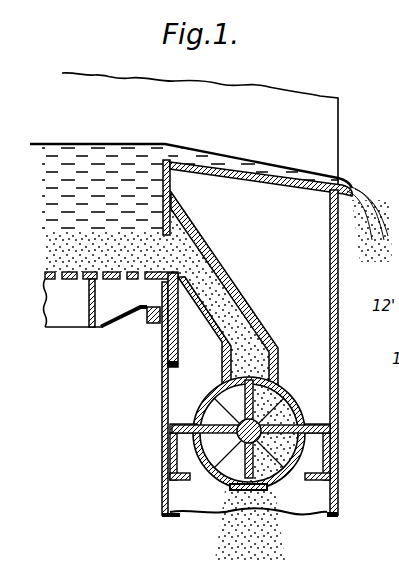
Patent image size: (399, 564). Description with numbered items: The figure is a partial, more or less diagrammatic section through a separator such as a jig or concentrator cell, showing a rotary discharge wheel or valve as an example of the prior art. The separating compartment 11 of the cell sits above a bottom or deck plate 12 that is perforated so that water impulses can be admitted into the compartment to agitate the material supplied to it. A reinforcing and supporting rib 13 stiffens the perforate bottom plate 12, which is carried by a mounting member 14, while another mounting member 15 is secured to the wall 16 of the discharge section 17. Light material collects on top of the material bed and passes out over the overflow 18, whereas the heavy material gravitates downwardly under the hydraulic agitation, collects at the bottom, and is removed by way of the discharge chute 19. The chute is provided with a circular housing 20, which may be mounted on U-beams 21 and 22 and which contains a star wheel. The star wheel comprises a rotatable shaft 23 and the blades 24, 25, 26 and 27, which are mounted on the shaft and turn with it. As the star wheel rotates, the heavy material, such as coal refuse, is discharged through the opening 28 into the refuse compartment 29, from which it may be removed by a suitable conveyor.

The separating compartment 11 is at (70, 160).
The bottom or deck plate 12 is at (63, 281).
The reinforcing and supporting rib 13 is at (88, 312).
The mounting member 14 is at (113, 314).
The mounting member 15 is at (152, 323).
The wall 16 is at (162, 383).
The discharge section 17 is at (162, 413).
The overflow 18 is at (334, 176).
The discharge chute 19 is at (233, 277).
The circular housing 20 is at (290, 380).
The U-beam 21 is at (176, 480).
The U-beam 22 is at (313, 484).
The rotatable shaft 23 is at (302, 385).
The blade 24 is at (224, 392).
The blade 25 is at (176, 433).
The blade 26 is at (291, 466).
The blade 27 is at (305, 420).
The opening 28 is at (264, 491).
The refuse compartment 29 is at (193, 510).